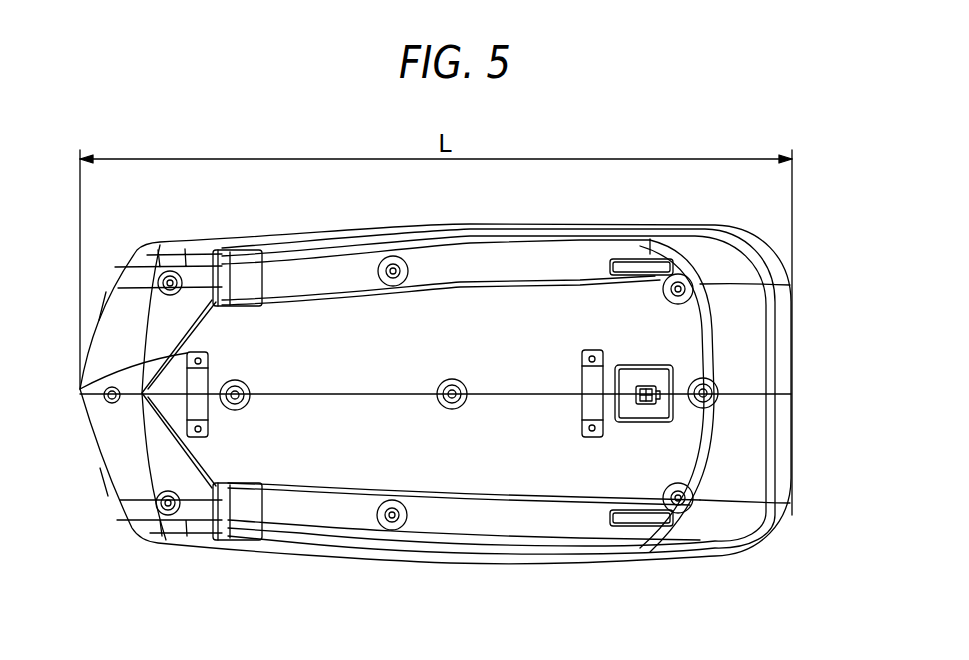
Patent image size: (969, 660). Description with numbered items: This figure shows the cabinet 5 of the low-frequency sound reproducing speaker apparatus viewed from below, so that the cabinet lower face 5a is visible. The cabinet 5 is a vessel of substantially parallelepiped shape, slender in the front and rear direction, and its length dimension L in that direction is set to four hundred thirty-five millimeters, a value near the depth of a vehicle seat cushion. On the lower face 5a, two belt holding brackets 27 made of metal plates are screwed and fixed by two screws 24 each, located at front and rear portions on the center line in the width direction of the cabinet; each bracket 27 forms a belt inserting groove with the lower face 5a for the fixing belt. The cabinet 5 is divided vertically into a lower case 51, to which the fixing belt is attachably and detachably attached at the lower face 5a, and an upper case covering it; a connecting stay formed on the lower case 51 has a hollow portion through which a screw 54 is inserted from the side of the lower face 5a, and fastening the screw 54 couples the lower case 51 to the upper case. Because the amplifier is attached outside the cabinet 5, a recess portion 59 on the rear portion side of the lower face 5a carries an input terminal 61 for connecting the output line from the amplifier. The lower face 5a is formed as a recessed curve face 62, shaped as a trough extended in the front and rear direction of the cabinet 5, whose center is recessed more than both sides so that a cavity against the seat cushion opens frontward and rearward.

The cabinet 5 is at (795, 473).
The cabinet lower face 5a is at (515, 320).
The screw 24 is at (80, 389).
The belt holding bracket 27 is at (582, 350).
The lower case 51 is at (530, 455).
The screw 54 is at (393, 256).
The recess portion 59 is at (650, 365).
The input terminal 61 is at (648, 422).
The recessed curve face 62 is at (340, 445).